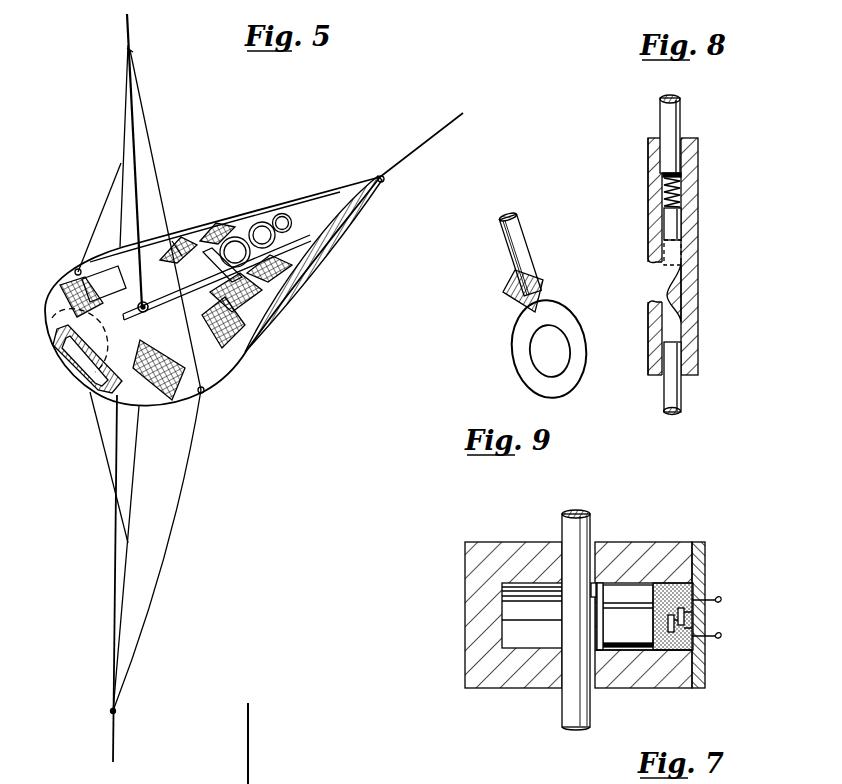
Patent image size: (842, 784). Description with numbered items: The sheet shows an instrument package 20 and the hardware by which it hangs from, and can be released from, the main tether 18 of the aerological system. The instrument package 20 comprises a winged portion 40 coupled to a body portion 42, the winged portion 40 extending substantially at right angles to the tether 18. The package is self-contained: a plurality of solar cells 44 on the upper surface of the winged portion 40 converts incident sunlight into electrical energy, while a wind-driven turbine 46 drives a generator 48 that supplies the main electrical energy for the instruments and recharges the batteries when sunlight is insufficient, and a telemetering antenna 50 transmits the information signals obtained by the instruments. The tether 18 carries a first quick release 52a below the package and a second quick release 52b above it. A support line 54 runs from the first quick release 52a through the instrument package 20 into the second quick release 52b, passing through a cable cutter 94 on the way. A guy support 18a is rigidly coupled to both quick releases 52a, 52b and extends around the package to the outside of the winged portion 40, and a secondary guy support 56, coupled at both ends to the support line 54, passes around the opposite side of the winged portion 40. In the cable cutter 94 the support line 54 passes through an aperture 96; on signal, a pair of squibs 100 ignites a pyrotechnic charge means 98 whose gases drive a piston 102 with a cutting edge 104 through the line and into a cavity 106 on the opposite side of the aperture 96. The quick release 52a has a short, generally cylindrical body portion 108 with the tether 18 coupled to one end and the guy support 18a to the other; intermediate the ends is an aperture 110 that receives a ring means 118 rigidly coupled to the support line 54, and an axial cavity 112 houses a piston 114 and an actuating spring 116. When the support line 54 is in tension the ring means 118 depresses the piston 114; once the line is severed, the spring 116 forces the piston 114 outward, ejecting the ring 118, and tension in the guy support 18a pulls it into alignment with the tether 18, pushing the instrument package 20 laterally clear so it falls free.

In FIG. 5, the main tether 18 is at (133, 22).
In FIG. 8, the main tether 18 is at (683, 398).
In FIG. 5, the guy support 18a is at (156, 167).
In FIG. 8, the guy support 18a is at (683, 114).
In FIG. 5, the instrument package 20 is at (266, 167).
In FIG. 7, the instrument package 20 is at (338, 778).
In FIG. 5, the winged portion 40 is at (258, 204).
In FIG. 5, the body portion 42 is at (318, 269).
In FIG. 5, the solar cells 44 is at (258, 303).
In FIG. 5, the wind-driven turbine 46 is at (66, 323).
In FIG. 5, the generator 48 is at (50, 308).
In FIG. 5, the telemetering antenna 50 is at (441, 137).
In FIG. 5, the first quick release 52a is at (112, 711).
In FIG. 8, the first quick release 52a is at (698, 256).
In FIG. 5, the second quick release 52b is at (133, 50).
In FIG. 5, the support line 54 is at (138, 458).
In FIG. 8, the support line 54 is at (518, 239).
In FIG. 9, the support line 54 is at (591, 521).
In FIG. 7, the support line 54 is at (250, 743).
In FIG. 5, the secondary guy support 56 is at (99, 222).
In FIG. 9, the cable cutter 94 is at (662, 542).
In FIG. 9, the aperture 96 is at (563, 543).
In FIG. 9, the pyrotechnic charge means 98 is at (699, 586).
In FIG. 9, the squibs 100 is at (690, 624).
In FIG. 9, the piston 102 is at (643, 688).
In FIG. 9, the cutting edge 104 is at (600, 652).
In FIG. 9, the cavity 106 is at (521, 596).
In FIG. 8, the body portion 108 is at (699, 281).
In FIG. 8, the aperture 110 is at (667, 289).
In FIG. 8, the axial cavity 112 is at (683, 182).
In FIG. 8, the piston 114 is at (683, 224).
In FIG. 8, the actuating spring 116 is at (685, 196).
In FIG. 8, the ring means 118 is at (555, 318).